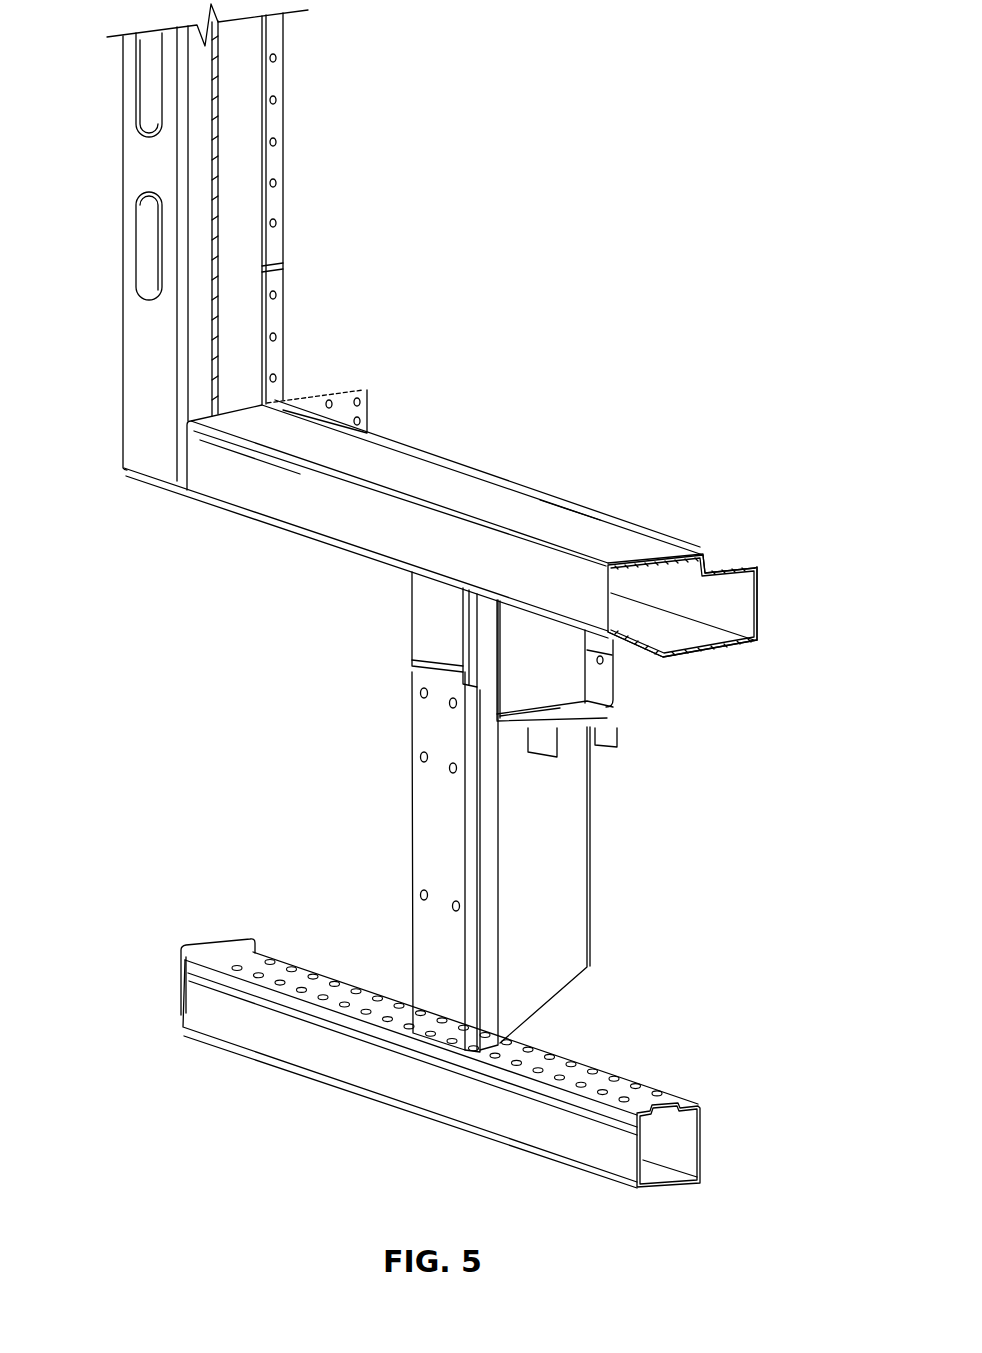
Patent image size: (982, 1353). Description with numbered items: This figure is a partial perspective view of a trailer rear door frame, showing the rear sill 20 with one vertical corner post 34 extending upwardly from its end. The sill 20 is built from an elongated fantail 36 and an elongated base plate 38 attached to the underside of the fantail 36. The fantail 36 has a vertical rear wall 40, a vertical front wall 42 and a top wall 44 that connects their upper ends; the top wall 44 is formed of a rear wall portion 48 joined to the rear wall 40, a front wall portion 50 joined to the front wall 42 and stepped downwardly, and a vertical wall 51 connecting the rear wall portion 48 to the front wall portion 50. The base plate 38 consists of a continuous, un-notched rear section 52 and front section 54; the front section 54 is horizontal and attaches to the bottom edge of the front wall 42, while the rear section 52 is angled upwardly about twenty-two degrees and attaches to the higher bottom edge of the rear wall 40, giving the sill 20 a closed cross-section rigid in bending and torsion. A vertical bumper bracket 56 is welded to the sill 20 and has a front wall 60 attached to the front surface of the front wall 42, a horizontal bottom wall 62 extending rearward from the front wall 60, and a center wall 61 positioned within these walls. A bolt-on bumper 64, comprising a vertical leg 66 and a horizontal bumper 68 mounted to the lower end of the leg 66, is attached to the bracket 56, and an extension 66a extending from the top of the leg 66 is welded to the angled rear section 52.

The rear sill 20 is at (573, 495).
The vertical corner post 34 is at (172, 318).
The fantail 36 is at (411, 519).
The base plate 38 is at (268, 528).
The rear wall 40 is at (228, 470).
The front wall 42 is at (757, 610).
The top wall 44 is at (650, 538).
The rear wall portion 48 is at (360, 455).
The front wall portion 50 is at (728, 560).
The vertical wall 51 is at (723, 572).
The rear section 52 is at (568, 665).
The front section 54 is at (740, 652).
The bumper bracket 56 is at (530, 687).
The front wall 60 is at (597, 699).
The center wall 61 is at (620, 733).
The bottom wall 62 is at (503, 720).
The bolt-on bumper 64 is at (297, 1066).
The vertical leg 66 is at (424, 818).
The extension 66a is at (427, 597).
The horizontal bumper 68 is at (606, 1077).